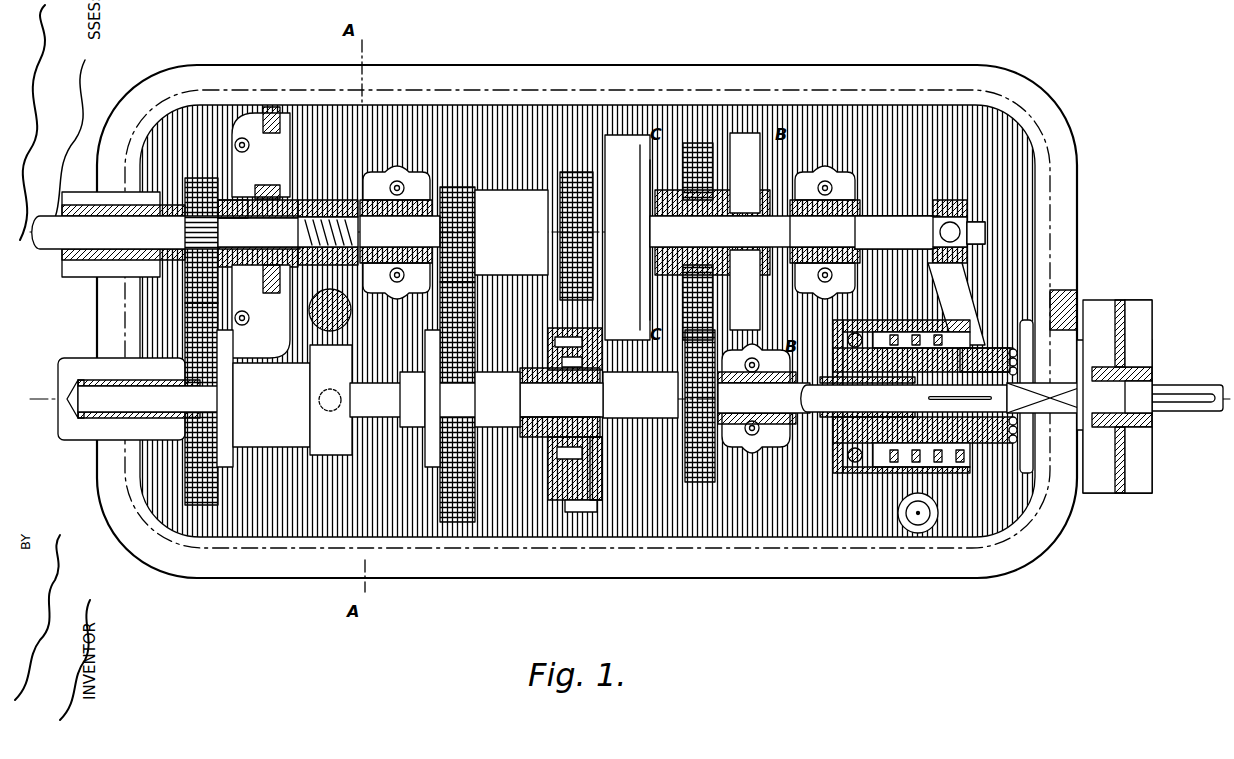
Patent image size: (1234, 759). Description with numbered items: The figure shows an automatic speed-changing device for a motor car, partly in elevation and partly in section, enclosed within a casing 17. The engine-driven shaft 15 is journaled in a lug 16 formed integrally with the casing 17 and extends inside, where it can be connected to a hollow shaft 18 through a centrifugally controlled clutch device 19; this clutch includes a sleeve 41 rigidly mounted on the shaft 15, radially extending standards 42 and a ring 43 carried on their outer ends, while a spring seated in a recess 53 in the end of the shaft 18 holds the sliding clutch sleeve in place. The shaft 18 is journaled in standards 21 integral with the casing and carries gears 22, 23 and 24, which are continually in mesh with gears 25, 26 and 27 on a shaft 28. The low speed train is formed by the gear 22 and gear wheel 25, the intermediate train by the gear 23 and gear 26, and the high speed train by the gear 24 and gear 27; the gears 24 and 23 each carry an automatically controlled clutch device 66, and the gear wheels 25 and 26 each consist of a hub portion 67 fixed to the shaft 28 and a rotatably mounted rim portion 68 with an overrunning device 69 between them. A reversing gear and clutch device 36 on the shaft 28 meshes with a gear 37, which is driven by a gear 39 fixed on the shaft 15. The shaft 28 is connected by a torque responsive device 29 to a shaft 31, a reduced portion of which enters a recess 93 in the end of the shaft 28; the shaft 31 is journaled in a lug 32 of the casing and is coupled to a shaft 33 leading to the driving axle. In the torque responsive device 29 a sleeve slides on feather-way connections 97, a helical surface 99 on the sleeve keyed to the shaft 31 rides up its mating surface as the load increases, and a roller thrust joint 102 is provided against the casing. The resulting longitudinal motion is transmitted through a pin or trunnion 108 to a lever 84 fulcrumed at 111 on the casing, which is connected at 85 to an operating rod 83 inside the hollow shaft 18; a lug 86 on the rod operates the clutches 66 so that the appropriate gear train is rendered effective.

The shaft 15 is at (57, 238).
The lug 16 is at (77, 200).
The casing 17 is at (182, 80).
The shaft 18 is at (402, 185).
The centrifugally controlled clutch device 19 is at (273, 135).
The standards 21 is at (855, 207).
The gear 22 is at (453, 190).
The gear 23 is at (573, 173).
The gear 24 is at (702, 147).
The gear wheel 25 is at (452, 527).
The gear 26 is at (582, 500).
The gear 27 is at (698, 487).
The shaft 28 is at (377, 407).
The torque responsive device 29 is at (877, 477).
The shaft 31 is at (965, 447).
The lug 32 is at (1060, 415).
The shaft 33 is at (1165, 382).
The reversing gear and clutch device 36 is at (207, 497).
The gear 37 is at (185, 290).
The gear 39 is at (257, 113).
The sleeve 41 is at (277, 182).
The standards 42 is at (241, 187).
The ring 43 is at (197, 195).
The recess 53 is at (352, 188).
The automatically controlled clutch device 66 is at (745, 148).
The hub portion 67 is at (528, 443).
The rim portion 68 is at (598, 505).
The overrunning device 69 is at (563, 460).
The operating rod 83 is at (967, 218).
The lever 84 is at (948, 283).
The connection 85 is at (967, 217).
The lug 86 is at (813, 187).
The recess 93 is at (788, 440).
The feather-way connections 97 is at (822, 470).
The helical surface 99 is at (1000, 443).
The roller thrust joint 102 is at (1058, 298).
The pin or trunnion 108 is at (943, 447).
The fulcrum 111 is at (918, 533).